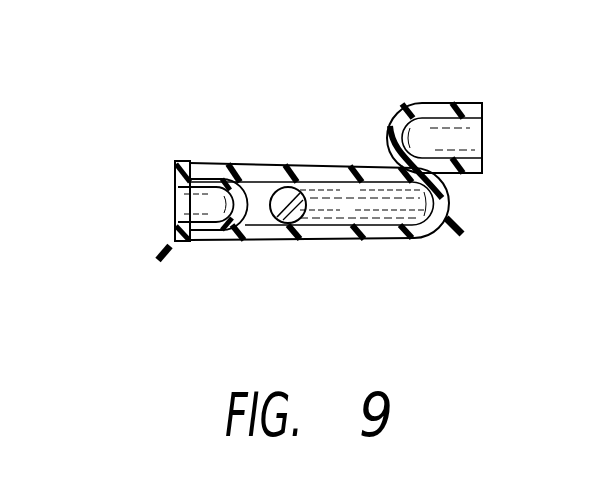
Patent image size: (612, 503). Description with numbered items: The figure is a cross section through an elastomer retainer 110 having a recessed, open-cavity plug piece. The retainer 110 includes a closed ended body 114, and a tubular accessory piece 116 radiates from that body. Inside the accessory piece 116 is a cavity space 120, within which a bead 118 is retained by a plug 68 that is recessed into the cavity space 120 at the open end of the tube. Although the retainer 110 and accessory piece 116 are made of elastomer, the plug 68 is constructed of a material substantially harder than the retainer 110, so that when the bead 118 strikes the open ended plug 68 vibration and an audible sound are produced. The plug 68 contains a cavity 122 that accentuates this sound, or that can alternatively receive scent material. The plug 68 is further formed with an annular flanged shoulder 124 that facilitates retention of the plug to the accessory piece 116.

The plug 68 is at (164, 252).
The elastomer retainer 110 is at (460, 232).
The closed ended body 114 is at (447, 102).
The tubular accessory piece 116 is at (324, 241).
The bead 118 is at (288, 187).
The cavity space 120 is at (373, 192).
The cavity 122 is at (178, 196).
The annular flanged shoulder 124 is at (181, 160).